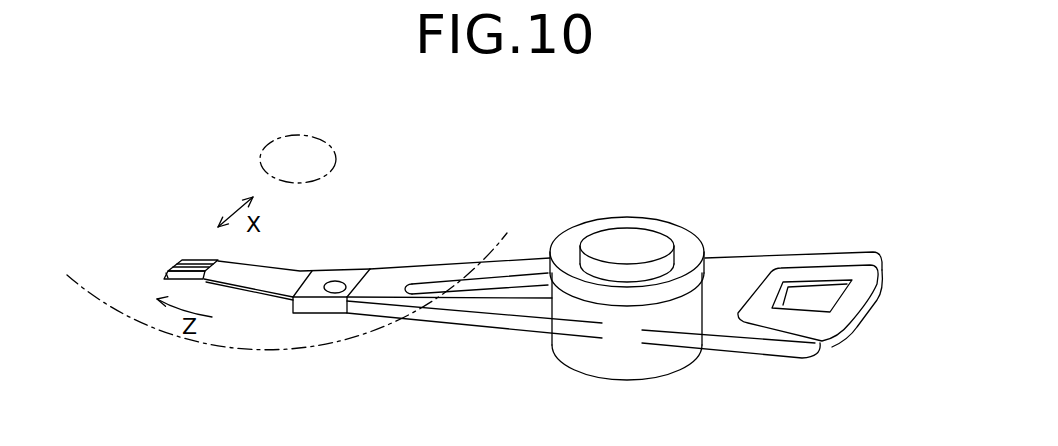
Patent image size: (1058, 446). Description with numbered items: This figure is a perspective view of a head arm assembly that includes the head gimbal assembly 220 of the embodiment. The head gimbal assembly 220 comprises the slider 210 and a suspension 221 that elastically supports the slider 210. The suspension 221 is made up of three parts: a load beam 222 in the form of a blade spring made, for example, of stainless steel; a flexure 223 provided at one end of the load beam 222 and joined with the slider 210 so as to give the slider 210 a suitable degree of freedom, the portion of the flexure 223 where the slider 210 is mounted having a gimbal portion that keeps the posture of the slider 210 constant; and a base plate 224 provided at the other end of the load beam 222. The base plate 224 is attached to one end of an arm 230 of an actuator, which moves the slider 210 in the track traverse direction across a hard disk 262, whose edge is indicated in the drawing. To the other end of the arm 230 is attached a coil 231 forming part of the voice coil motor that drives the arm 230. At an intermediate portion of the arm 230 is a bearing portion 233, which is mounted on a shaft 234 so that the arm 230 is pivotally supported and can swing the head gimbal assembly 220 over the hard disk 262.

The slider 210 is at (197, 260).
The head gimbal assembly 220 is at (282, 312).
The suspension 221 is at (279, 268).
The load beam 222 is at (298, 281).
The flexure 223 is at (167, 271).
The base plate 224 is at (363, 270).
The arm 230 is at (442, 318).
The coil 231 is at (866, 314).
The bearing portion 233 is at (570, 240).
The shaft 234 is at (640, 240).
The hard disk 262 is at (204, 344).